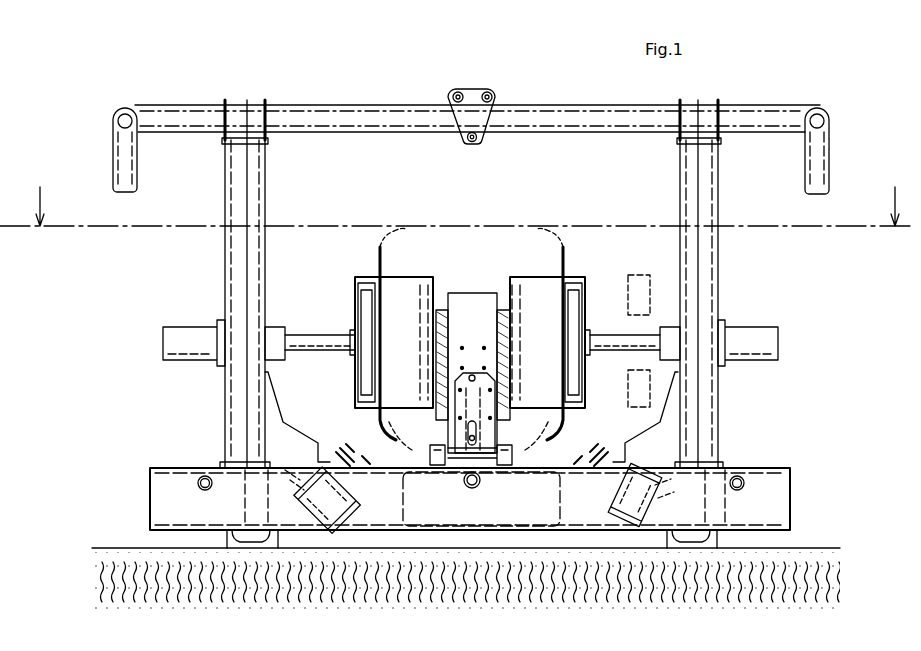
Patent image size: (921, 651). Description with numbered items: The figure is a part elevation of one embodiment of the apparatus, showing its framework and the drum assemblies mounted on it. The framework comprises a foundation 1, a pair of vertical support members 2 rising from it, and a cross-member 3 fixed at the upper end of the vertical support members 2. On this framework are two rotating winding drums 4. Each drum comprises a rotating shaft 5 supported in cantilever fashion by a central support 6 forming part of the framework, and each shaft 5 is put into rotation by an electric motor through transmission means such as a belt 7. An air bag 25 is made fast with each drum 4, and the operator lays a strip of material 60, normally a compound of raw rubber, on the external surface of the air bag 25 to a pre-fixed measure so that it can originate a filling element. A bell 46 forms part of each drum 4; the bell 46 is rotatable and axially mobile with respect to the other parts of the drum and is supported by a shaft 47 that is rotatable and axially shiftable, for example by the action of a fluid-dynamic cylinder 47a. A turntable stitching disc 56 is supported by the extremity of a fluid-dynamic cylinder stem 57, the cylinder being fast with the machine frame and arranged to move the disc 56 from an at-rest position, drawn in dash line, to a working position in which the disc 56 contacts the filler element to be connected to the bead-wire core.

The foundation 1 is at (146, 522).
The vertical support members 2 is at (688, 224).
The cross-member 3 is at (564, 120).
The rotating winding drums 4 is at (376, 232).
The rotating shaft 5 is at (437, 303).
The central support 6 is at (474, 300).
The belt 7 is at (424, 416).
The air bag 25 is at (394, 246).
The bell 46 is at (640, 275).
The shaft 47 is at (316, 334).
The fluid-dynamic cylinder 47a is at (198, 328).
The turntable stitching disc 56 is at (352, 448).
The fluid-dynamic cylinder stem 57 is at (334, 506).
The strip of material 60 is at (378, 265).